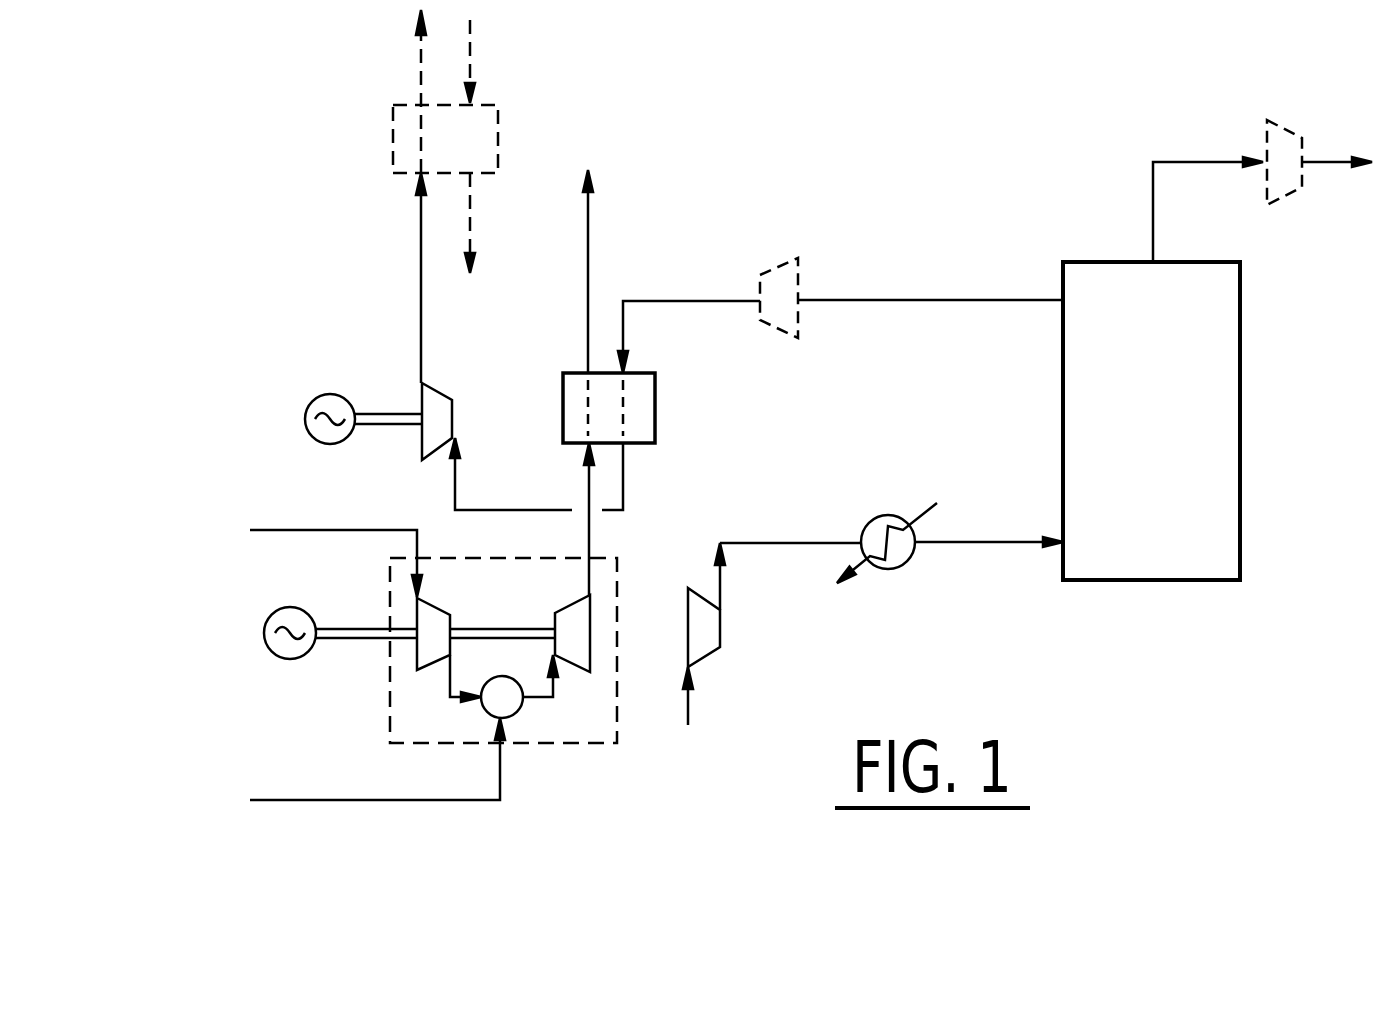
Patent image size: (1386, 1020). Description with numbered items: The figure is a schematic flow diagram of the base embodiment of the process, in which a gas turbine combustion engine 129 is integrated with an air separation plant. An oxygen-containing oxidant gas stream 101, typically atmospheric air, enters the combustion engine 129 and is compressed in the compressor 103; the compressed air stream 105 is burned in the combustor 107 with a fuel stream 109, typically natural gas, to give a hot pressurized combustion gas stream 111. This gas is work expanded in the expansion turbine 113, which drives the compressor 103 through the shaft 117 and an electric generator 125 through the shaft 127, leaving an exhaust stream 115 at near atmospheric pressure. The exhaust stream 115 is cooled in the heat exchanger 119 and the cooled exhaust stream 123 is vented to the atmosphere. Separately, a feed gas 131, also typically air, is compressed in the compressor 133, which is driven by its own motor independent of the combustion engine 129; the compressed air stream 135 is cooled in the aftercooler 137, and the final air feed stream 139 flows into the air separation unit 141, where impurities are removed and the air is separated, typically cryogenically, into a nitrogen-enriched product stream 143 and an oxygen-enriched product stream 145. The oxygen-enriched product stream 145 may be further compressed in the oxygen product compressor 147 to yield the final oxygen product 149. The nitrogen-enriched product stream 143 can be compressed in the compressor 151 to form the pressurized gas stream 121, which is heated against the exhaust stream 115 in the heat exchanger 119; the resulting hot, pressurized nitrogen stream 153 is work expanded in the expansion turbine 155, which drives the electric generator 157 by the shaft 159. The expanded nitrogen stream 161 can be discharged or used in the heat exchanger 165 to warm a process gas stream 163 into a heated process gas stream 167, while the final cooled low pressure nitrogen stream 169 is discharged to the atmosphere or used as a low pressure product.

The oxygen-containing oxidant gas stream 101 is at (325, 528).
The compressor 103 is at (432, 602).
The compressed air stream 105 is at (447, 677).
The combustor 107 is at (516, 713).
The fuel stream 109 is at (445, 802).
The hot pressurized combustion gas stream 111 is at (557, 683).
The expansion turbine 113 is at (585, 595).
The exhaust stream 115 is at (589, 530).
The shaft 117 is at (502, 651).
The heat exchanger 119 is at (655, 418).
The pressurized gas stream 121 is at (692, 300).
The cooled exhaust stream 123 is at (588, 301).
The electric generator 125 is at (268, 612).
The shaft 127 is at (350, 645).
The combustion engine 129 is at (615, 745).
The feed gas 131 is at (688, 705).
The compressor 133 is at (720, 633).
The compressed air stream 135 is at (782, 545).
The aftercooler 137 is at (888, 515).
The final air feed stream 139 is at (980, 545).
The air separation unit 141 is at (1153, 582).
The nitrogen-enriched product stream 143 is at (940, 302).
The oxygen-enriched product stream 145 is at (1196, 158).
The oxygen product compressor 147 is at (1303, 183).
The final oxygen product 149 is at (1327, 158).
The compressor 151 is at (798, 283).
The hot, pressurized nitrogen stream 153 is at (512, 510).
The expansion turbine 155 is at (455, 418).
The electric generator 157 is at (300, 410).
The shaft 159 is at (388, 412).
The expanded nitrogen stream 161 is at (421, 257).
The process gas stream 163 is at (470, 62).
The heat exchanger 165 is at (393, 140).
The heated process gas stream 167 is at (470, 217).
The final cooled low pressure nitrogen stream 169 is at (420, 60).